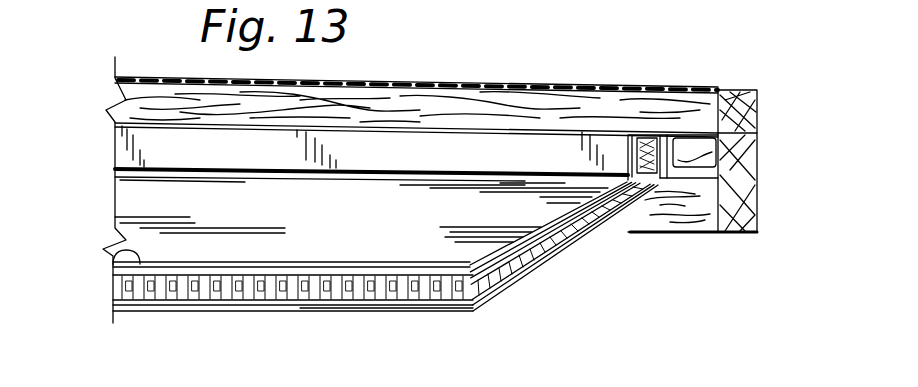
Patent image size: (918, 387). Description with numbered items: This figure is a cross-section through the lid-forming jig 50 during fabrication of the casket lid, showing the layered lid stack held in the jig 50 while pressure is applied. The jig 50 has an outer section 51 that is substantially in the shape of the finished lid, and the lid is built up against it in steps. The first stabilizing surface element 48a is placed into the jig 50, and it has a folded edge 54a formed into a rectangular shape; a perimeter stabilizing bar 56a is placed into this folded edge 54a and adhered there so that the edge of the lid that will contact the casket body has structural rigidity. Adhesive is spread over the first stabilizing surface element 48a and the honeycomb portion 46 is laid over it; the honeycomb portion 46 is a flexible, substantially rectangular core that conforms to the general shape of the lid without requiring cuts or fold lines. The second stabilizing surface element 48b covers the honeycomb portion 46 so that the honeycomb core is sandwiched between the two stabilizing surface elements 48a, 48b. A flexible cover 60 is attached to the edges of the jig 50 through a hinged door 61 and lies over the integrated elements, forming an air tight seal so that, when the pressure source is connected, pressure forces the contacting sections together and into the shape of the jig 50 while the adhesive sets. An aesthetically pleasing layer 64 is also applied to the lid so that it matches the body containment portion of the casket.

The honeycomb portion 46 is at (292, 310).
The first stabilizing surface element 48a is at (206, 308).
The second stabilizing surface element 48b is at (115, 258).
The jig 50 is at (700, 212).
The outer section 51 is at (363, 303).
The folded edge 54a is at (757, 146).
The perimeter stabilizing bar 56a is at (657, 133).
The flexible cover 60 is at (472, 83).
The hinged door 61 is at (757, 100).
The aesthetically pleasing layer 64 is at (568, 264).